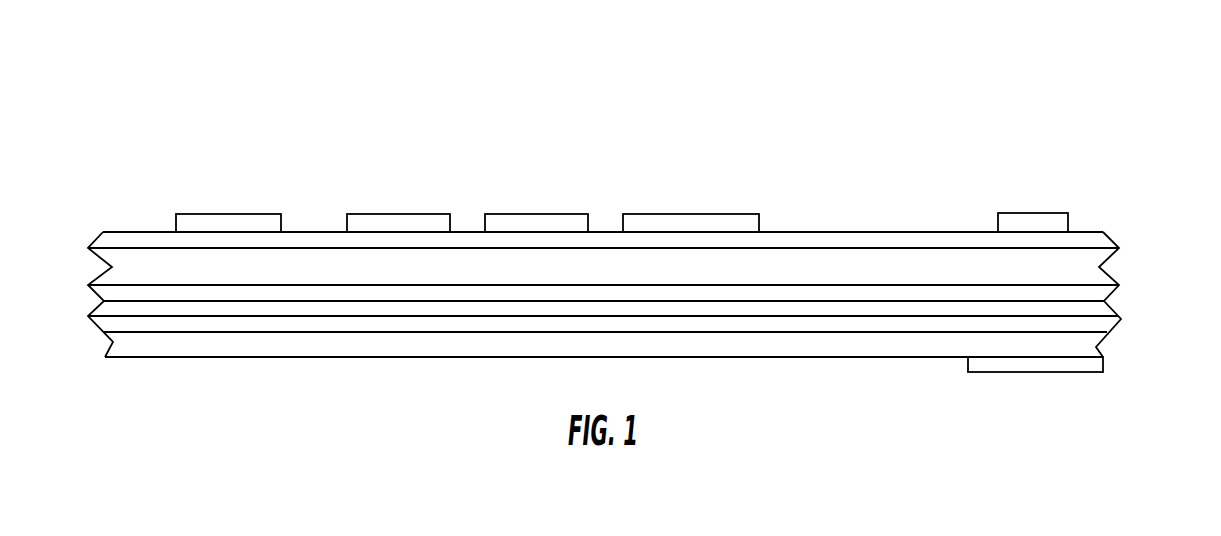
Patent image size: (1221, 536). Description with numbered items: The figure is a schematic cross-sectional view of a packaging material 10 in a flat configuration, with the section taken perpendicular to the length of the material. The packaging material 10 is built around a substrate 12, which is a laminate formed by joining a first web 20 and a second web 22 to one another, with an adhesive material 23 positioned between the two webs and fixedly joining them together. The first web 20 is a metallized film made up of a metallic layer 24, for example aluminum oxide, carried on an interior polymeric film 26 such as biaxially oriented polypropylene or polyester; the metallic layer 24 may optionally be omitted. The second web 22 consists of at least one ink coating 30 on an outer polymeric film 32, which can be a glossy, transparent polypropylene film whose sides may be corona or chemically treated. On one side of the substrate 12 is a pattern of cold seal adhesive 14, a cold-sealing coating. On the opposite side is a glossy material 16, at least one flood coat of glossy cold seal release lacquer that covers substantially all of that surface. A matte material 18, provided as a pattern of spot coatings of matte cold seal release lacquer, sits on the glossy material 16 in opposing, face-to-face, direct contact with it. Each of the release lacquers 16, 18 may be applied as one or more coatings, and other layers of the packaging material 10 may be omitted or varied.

The packaging material 10 is at (147, 96).
The substrate 12 is at (1165, 248).
The cold seal adhesive 14 is at (1062, 373).
The glossy material 16 is at (113, 240).
The matte material 18 is at (238, 214).
The first web 20 is at (80, 316).
The second web 22 is at (80, 248).
The adhesive material 23 is at (1093, 307).
The metallic layer 24 is at (335, 323).
The interior polymeric film 26 is at (228, 350).
The ink coating 30 is at (916, 295).
The outer polymeric film 32 is at (799, 270).